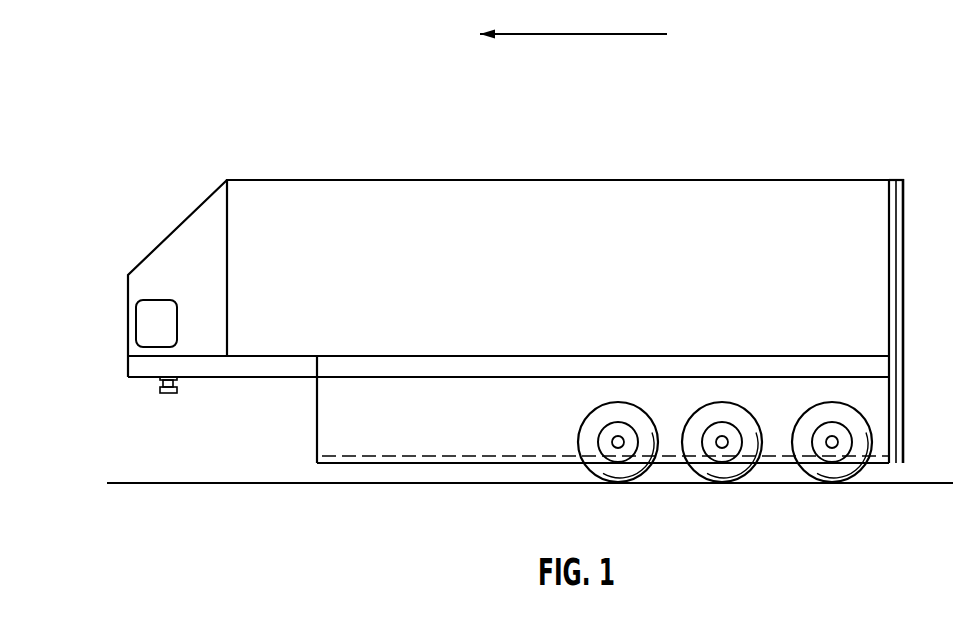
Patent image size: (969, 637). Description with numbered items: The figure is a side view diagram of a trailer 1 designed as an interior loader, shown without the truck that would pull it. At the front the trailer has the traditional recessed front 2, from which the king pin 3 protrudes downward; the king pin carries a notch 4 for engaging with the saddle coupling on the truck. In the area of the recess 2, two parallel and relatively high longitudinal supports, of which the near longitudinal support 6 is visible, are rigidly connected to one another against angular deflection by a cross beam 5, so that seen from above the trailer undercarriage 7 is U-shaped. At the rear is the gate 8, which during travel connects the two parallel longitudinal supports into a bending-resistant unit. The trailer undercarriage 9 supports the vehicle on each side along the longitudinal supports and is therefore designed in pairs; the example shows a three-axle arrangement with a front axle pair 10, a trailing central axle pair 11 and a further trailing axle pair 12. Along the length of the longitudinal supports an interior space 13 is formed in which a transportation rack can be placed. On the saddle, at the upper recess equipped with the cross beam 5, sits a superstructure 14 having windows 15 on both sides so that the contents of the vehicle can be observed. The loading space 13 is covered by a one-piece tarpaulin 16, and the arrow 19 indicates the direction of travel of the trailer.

The trailer 1 is at (515, 282).
The recessed front 2 is at (563, 450).
The king pin 3 is at (173, 393).
The notch 4 is at (158, 387).
The cross beam 5 is at (130, 366).
The longitudinal support 6 is at (383, 440).
The trailer undercarriage 7 is at (471, 465).
The gate 8 is at (901, 311).
The trailer undercarriage (running gear) 9 is at (725, 412).
The front axle pair 10 is at (619, 444).
The trailing central axle pair 11 is at (724, 444).
The trailing axle pair 12 is at (831, 444).
The interior space 13 is at (858, 196).
The superstructure 14 is at (193, 237).
The window 15 is at (149, 320).
The tarpaulin 16 is at (467, 194).
The direction of travel arrow 19 is at (587, 35).